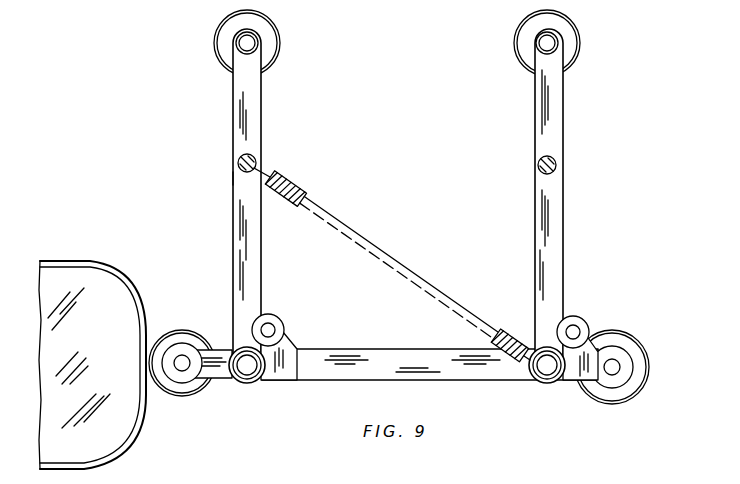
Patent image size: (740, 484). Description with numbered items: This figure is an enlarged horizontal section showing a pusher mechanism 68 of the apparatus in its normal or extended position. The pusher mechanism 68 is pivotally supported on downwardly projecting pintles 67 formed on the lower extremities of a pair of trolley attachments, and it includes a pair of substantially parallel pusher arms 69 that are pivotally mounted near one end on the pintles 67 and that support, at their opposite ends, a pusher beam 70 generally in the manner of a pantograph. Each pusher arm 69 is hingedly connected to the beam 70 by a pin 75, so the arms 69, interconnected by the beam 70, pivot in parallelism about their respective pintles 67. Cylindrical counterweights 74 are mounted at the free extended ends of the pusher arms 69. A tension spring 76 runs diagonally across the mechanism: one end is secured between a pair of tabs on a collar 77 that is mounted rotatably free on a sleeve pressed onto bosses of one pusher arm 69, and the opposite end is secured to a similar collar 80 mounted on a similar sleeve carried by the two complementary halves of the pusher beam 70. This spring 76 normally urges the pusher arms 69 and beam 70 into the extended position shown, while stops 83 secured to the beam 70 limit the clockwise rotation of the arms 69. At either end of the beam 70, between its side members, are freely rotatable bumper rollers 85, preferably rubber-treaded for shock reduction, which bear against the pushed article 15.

The blade 15 is at (147, 450).
The pintle 67 is at (256, 160).
The pusher mechanism 68 is at (634, 206).
The pusher arm 69 is at (233, 258).
The pusher beam 70 is at (388, 349).
The cylindrical counterweight 74 is at (278, 43).
The pin 75 is at (247, 375).
The tension spring 76 is at (306, 190).
The collar 77 is at (233, 178).
The collar 80 is at (528, 376).
The stop 83 is at (285, 328).
The bumper roller 85 is at (186, 332).